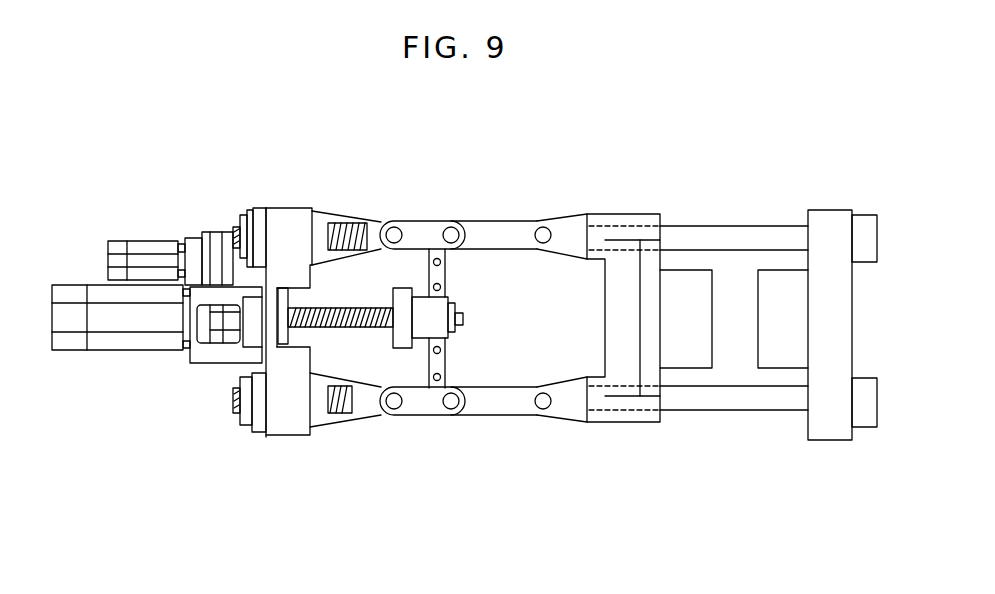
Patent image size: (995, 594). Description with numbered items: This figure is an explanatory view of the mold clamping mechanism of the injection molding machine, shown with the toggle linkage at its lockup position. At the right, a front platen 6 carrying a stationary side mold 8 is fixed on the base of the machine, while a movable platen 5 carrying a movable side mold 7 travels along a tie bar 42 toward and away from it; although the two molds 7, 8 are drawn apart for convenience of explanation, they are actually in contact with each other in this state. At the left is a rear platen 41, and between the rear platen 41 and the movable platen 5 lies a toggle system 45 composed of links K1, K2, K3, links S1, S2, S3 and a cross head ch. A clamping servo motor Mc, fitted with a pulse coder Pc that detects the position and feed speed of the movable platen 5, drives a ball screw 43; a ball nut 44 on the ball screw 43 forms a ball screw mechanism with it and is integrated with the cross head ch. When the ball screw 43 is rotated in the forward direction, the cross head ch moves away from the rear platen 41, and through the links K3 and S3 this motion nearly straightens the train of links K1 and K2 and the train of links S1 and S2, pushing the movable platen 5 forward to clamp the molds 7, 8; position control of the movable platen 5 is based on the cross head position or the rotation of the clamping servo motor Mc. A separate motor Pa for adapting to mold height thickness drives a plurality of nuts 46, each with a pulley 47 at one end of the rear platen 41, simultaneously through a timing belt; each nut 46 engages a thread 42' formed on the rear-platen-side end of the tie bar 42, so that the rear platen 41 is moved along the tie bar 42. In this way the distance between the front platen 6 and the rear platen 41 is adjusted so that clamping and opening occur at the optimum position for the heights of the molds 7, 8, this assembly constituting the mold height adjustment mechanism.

The motor for adapting to mold height thickness Pa is at (142, 244).
The pulse coder Pc is at (73, 345).
The clamping servo motor Mc is at (152, 342).
The nut 46 is at (243, 214).
The pulley 47 is at (248, 427).
The rear platen 41 is at (283, 423).
The thread 42' is at (345, 326).
The tie bar 42 is at (734, 328).
The ball screw 43 is at (323, 327).
The ball nut 44 is at (397, 298).
The toggle system 45 is at (483, 357).
The link K1 is at (423, 232).
The link K2 is at (500, 232).
The link K3 is at (446, 275).
The link S1 is at (423, 406).
The link S2 is at (498, 406).
The link S3 is at (446, 366).
The cross head ch is at (436, 305).
The movable platen 5 is at (621, 214).
The front platen 6 is at (828, 428).
The movable side mold 7 is at (700, 294).
The stationary side mold 8 is at (768, 347).